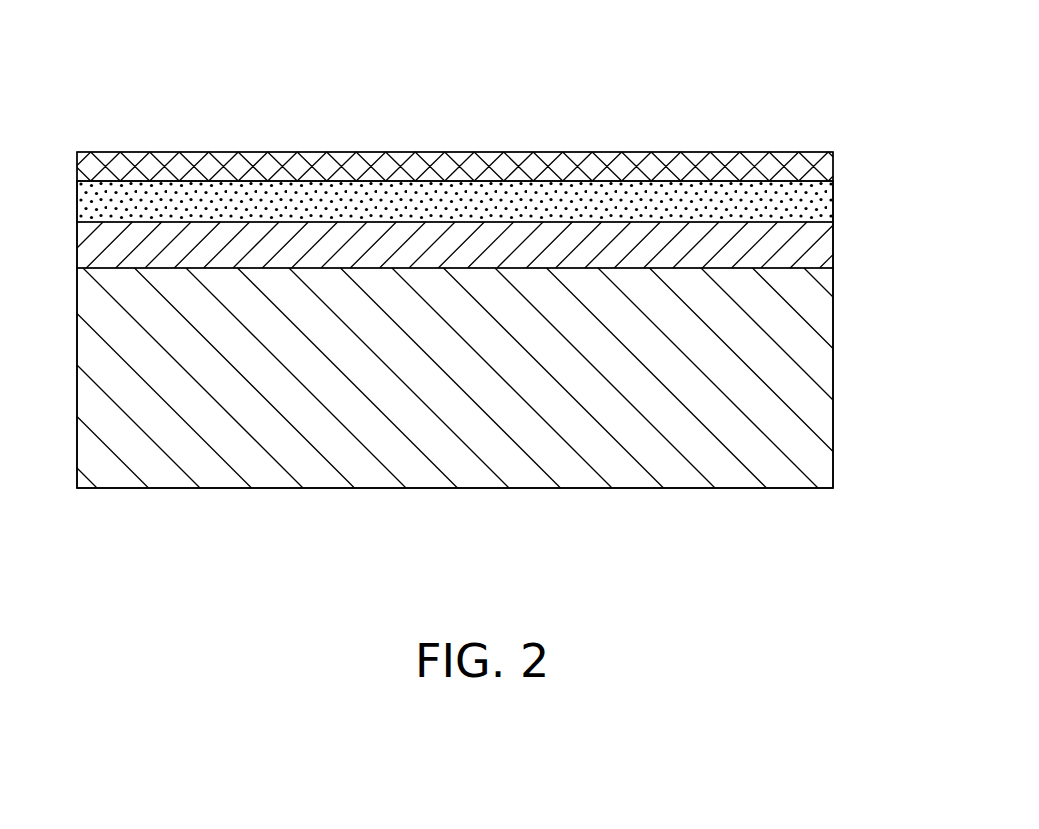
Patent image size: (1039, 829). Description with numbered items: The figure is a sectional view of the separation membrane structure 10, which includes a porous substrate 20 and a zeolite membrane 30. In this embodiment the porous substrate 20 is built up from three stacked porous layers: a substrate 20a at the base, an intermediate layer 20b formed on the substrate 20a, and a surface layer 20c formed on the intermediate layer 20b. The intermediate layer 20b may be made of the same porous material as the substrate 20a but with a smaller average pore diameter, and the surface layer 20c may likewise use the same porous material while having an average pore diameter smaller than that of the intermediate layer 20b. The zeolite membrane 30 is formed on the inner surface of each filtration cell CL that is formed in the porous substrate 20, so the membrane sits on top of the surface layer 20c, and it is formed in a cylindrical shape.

The separation membrane structure 10 is at (767, 107).
The filtration cell CL is at (517, 124).
The zeolite membrane 30 is at (820, 167).
The porous substrate 20 is at (940, 185).
The substrate 20a is at (820, 359).
The intermediate layer 20b is at (820, 251).
The surface layer 20c is at (822, 199).